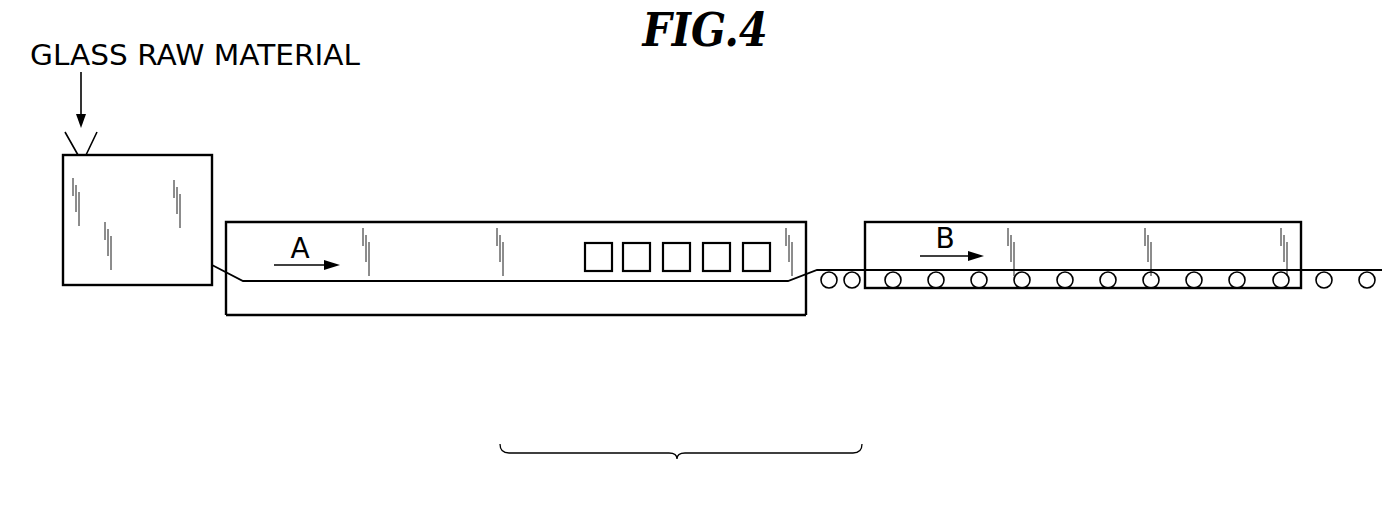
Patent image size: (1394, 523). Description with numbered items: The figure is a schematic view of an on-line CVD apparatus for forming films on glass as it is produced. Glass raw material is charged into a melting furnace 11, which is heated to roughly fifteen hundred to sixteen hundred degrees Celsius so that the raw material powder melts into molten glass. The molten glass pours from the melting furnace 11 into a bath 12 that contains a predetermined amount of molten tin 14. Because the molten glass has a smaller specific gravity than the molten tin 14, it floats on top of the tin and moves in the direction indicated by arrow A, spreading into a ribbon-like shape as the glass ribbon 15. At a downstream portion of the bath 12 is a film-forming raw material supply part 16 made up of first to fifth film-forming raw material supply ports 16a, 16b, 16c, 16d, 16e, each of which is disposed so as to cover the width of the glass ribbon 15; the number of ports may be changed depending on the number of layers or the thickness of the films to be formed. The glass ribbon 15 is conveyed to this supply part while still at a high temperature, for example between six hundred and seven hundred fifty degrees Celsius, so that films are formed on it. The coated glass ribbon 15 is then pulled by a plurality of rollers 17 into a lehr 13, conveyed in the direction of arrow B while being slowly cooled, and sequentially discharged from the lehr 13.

The melting furnace 11 is at (141, 285).
The bath 12 is at (387, 238).
The lehr 13 is at (1099, 238).
The molten tin 14 is at (437, 295).
The glass ribbon 15 is at (303, 281).
The film-forming raw material supply part 16 is at (681, 468).
The first film-forming raw material supply port 16a is at (598, 271).
The second film-forming raw material supply port 16b is at (636, 271).
The third film-forming raw material supply port 16c is at (676, 271).
The fourth film-forming raw material supply port 16d is at (716, 271).
The fifth film-forming raw material supply port 16e is at (756, 271).
The rollers 17 is at (829, 288).